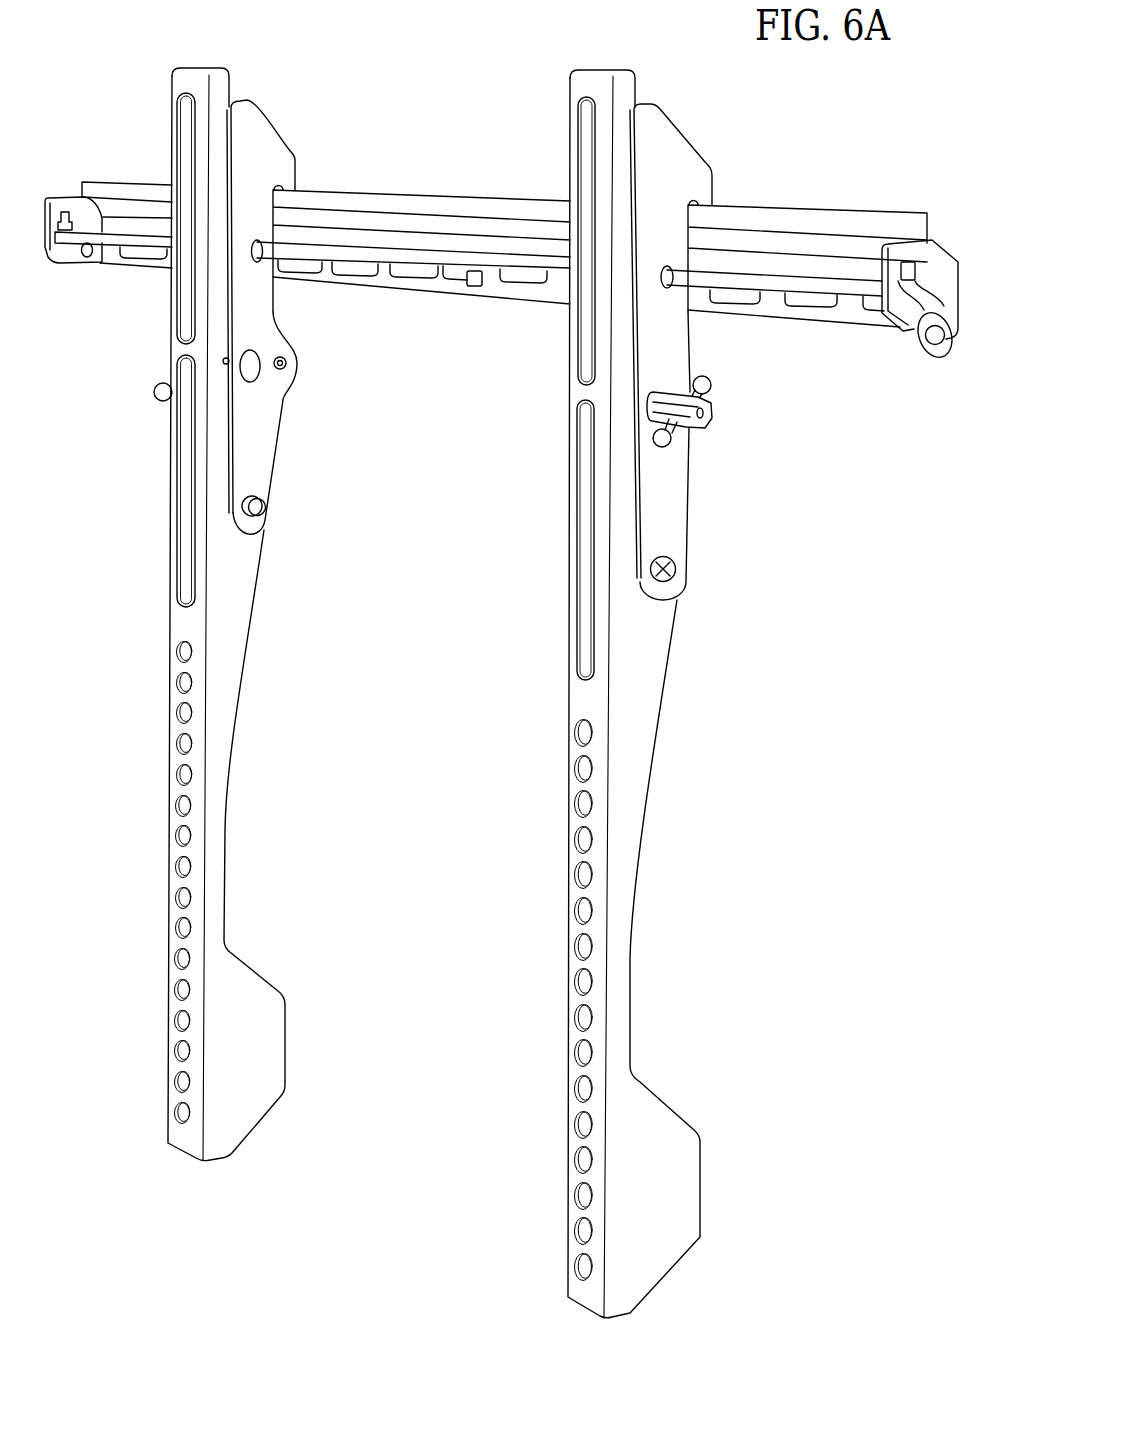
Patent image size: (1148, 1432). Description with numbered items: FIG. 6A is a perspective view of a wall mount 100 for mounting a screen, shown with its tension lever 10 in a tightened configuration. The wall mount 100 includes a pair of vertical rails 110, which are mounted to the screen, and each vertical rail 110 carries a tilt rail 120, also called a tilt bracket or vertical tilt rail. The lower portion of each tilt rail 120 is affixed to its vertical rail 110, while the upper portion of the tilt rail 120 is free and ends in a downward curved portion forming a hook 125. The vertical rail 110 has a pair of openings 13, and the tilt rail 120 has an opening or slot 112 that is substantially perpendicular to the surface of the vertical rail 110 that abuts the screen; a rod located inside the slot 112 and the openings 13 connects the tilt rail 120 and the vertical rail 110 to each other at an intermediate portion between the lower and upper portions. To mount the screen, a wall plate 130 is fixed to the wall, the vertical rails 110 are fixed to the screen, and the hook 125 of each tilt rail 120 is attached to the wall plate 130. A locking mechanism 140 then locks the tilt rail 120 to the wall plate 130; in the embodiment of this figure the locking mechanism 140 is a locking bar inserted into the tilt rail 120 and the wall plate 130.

The wall mount 100 is at (855, 921).
The vertical rail 110 is at (182, 622).
The tilt rail 120 is at (268, 127).
The hook 125 is at (290, 187).
The wall plate 130 is at (843, 215).
The locking mechanism 140 is at (922, 363).
The slot 112 is at (283, 363).
The openings 13 is at (656, 392).
The tension lever 10 is at (702, 426).